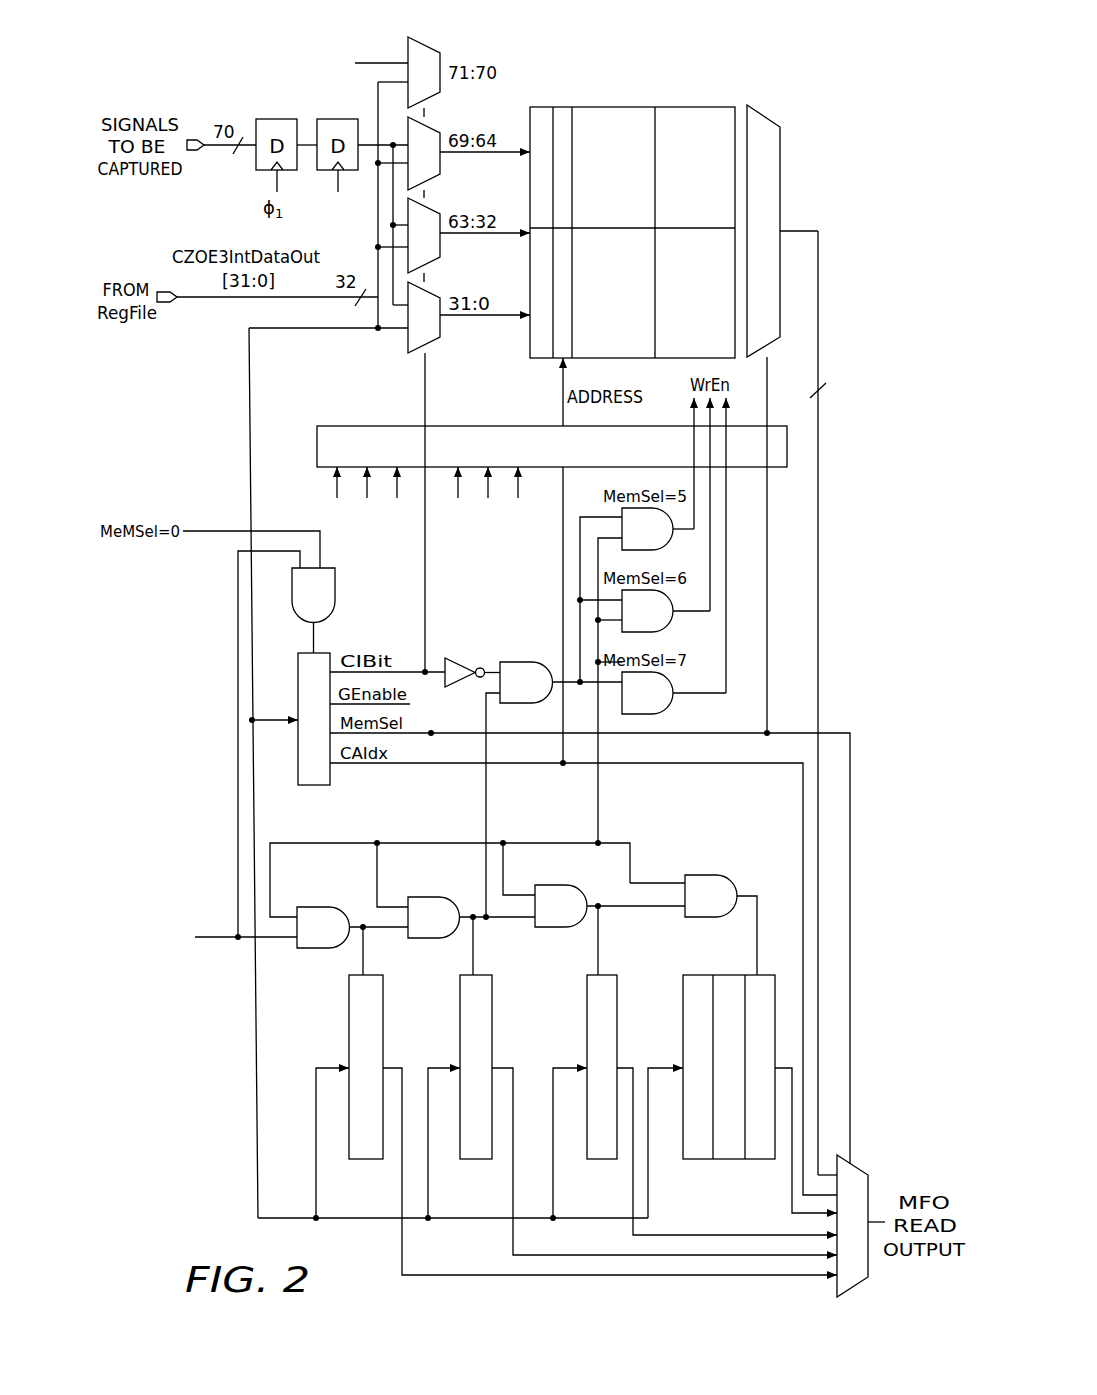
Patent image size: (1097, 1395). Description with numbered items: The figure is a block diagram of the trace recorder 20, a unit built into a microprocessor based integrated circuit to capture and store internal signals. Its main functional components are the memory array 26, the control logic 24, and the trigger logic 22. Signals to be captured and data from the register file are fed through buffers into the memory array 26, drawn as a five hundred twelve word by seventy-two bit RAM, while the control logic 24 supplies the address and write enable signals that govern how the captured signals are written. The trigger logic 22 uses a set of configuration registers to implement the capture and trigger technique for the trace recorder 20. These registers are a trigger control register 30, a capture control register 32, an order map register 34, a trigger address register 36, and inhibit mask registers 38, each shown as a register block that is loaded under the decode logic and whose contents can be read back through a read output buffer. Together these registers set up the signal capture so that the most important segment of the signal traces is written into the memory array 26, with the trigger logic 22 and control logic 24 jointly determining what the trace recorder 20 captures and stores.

The trace recorder 20 is at (840, 58).
The trigger logic 22 is at (558, 814).
The control logic 24 is at (373, 425).
The memory array 26 is at (684, 106).
The trigger control register 30 is at (312, 786).
The capture control register 32 is at (366, 1160).
The order map register 34 is at (478, 1160).
The trigger address register 36 is at (603, 1160).
The inhibit mask registers 38 is at (736, 1160).